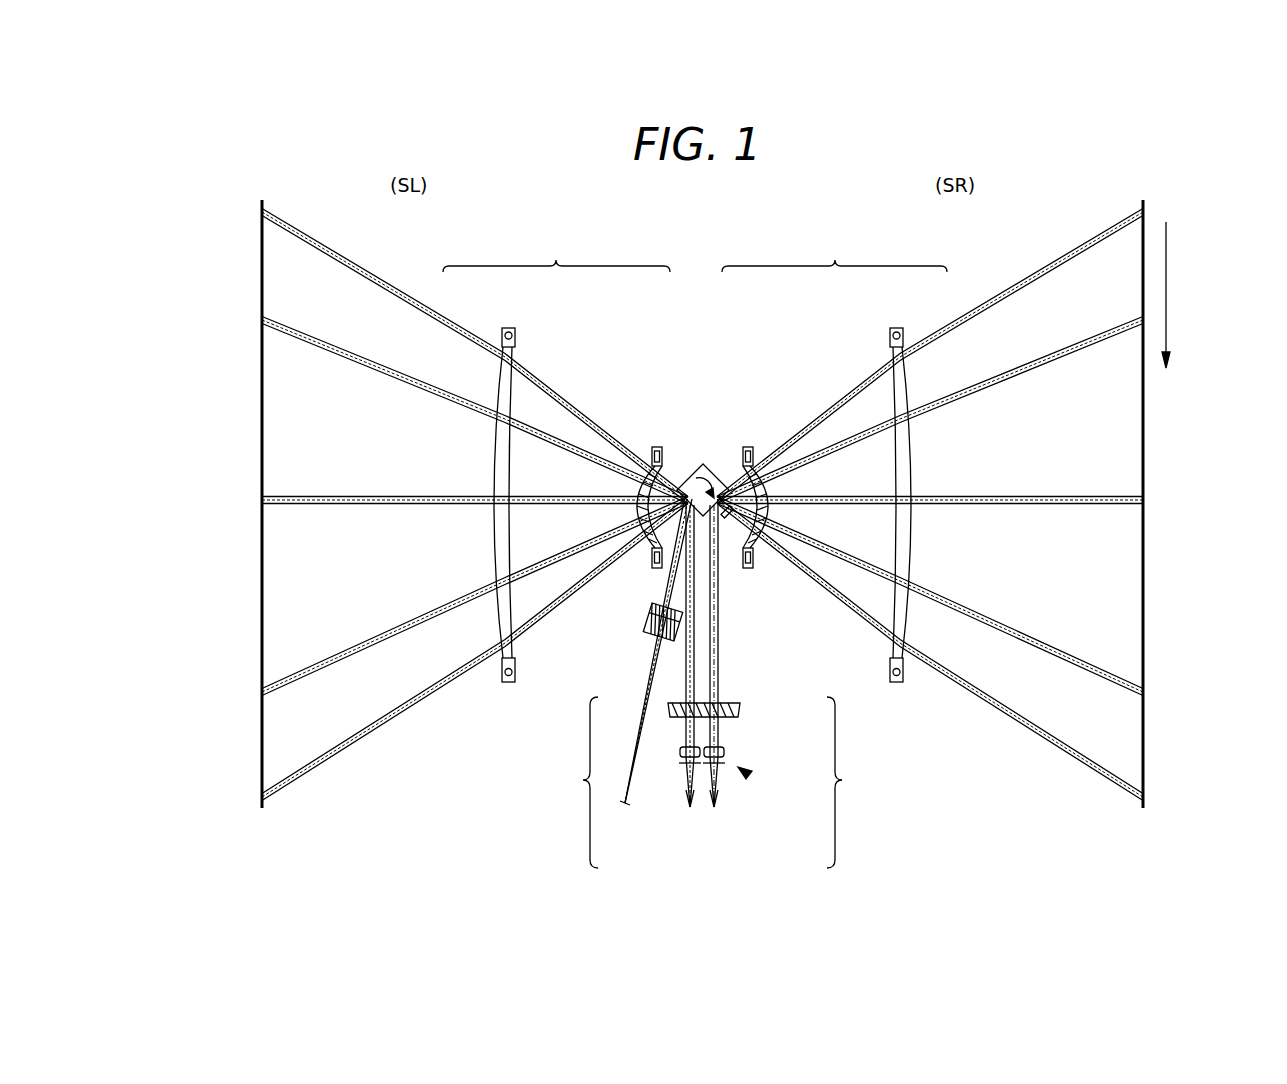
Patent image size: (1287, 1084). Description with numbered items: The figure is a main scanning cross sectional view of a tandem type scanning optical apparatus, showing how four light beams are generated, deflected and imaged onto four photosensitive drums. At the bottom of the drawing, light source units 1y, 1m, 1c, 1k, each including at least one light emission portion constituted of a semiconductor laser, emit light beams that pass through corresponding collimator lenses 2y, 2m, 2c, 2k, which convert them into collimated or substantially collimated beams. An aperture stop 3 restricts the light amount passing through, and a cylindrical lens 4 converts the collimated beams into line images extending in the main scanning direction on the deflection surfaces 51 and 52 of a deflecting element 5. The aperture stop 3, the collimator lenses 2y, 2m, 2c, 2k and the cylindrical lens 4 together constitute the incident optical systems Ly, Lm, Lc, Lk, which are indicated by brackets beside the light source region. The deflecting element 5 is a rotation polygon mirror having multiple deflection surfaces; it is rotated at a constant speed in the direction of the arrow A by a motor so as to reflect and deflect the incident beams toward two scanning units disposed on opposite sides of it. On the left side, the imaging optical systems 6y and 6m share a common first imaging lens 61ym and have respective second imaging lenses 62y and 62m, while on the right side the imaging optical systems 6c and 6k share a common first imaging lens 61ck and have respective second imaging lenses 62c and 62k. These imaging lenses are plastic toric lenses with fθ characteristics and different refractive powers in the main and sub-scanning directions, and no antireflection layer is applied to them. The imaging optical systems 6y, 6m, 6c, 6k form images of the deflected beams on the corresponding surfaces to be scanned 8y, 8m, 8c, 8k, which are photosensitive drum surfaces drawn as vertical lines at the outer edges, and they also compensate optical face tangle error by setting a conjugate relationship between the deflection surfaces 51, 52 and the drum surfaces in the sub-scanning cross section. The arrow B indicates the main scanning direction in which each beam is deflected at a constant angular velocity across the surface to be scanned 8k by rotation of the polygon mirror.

The light source unit 1y is at (676, 830).
The light source unit 1m is at (690, 812).
The light source unit 1c is at (742, 821).
The light source unit 1k is at (715, 810).
The collimator lens 2y is at (653, 793).
The collimator lens 2m is at (680, 753).
The collimator lens 2c is at (761, 750).
The collimator lens 2k is at (726, 752).
The aperture stop 3 is at (746, 776).
The cylindrical lens 4 is at (742, 710).
The deflecting element 5 is at (692, 466).
The deflection surface 51 is at (730, 518).
The deflection surface 52 is at (668, 566).
The first imaging lens 61ym is at (650, 447).
The first imaging lens 61ck is at (752, 447).
The second imaging lens 62y is at (507, 482).
The second imaging lens 62m is at (508, 326).
The second imaging lens 62c is at (893, 482).
The second imaging lens 62k is at (895, 326).
The imaging optical system 6y is at (556, 252).
The imaging optical system 6m is at (556, 252).
The imaging optical system 6c is at (834, 252).
The imaging optical system 6k is at (834, 252).
The surface to be scanned 8y is at (208, 504).
The surface to be scanned 8m is at (262, 778).
The surface to be scanned 8c is at (1198, 504).
The surface to be scanned 8k is at (1150, 768).
The rotation direction arrow A is at (710, 475).
The scanning direction arrow B is at (1173, 295).
The incident optical system Ly is at (556, 782).
The incident optical system Lm is at (556, 782).
The incident optical system Lc is at (866, 782).
The incident optical system Lk is at (866, 782).